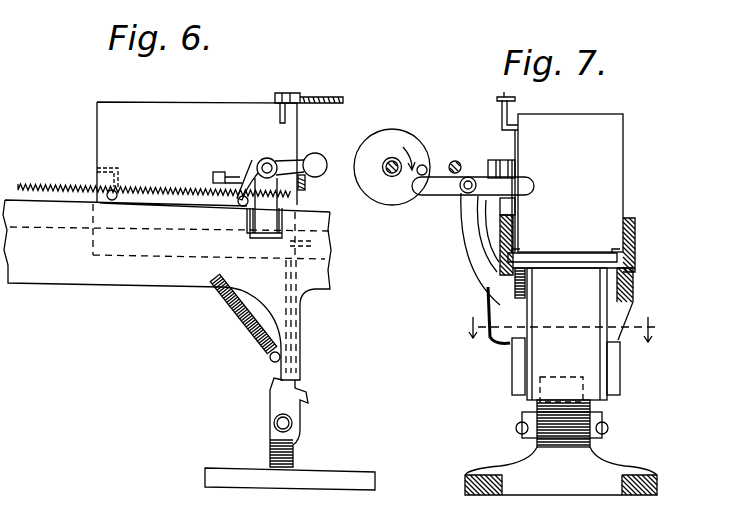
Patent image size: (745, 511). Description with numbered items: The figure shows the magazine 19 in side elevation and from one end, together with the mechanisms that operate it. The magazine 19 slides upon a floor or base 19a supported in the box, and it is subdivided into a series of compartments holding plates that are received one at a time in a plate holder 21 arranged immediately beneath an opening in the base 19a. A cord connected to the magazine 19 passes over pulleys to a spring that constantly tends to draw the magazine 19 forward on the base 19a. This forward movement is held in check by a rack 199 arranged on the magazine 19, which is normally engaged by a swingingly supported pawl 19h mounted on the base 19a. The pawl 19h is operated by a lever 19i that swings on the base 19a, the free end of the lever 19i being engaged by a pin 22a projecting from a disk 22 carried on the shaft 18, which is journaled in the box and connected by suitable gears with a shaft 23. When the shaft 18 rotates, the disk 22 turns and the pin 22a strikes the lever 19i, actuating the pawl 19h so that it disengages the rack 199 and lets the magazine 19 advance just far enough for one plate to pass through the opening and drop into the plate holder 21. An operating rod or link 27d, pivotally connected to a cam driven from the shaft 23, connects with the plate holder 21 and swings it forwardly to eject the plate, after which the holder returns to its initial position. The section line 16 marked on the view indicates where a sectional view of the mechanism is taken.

In FIG. 7, the section line 16 is at (566, 328).
In FIG. 7, the shaft 18 is at (390, 177).
In FIG. 6, the magazine 19 is at (191, 173).
In FIG. 7, the magazine 19 is at (615, 155).
In FIG. 6, the base 19a is at (330, 97).
In FIG. 7, the base 19a is at (562, 260).
In FIG. 6, the pawl 19h is at (316, 156).
In FIG. 7, the pawl 19h is at (522, 169).
In FIG. 6, the lever 19i is at (303, 180).
In FIG. 7, the lever 19i is at (435, 188).
In FIG. 6, the rack 199 is at (37, 185).
In FIG. 7, the rack 199 is at (513, 207).
In FIG. 6, the plate holder 21 is at (287, 389).
In FIG. 7, the plate holder 21 is at (585, 358).
In FIG. 7, the disk 22 is at (393, 135).
In FIG. 7, the pin 22a is at (424, 166).
In FIG. 7, the shaft 23 is at (457, 162).
In FIG. 6, the operating rod or link 27d is at (232, 315).
In FIG. 7, the operating rod or link 27d is at (490, 302).